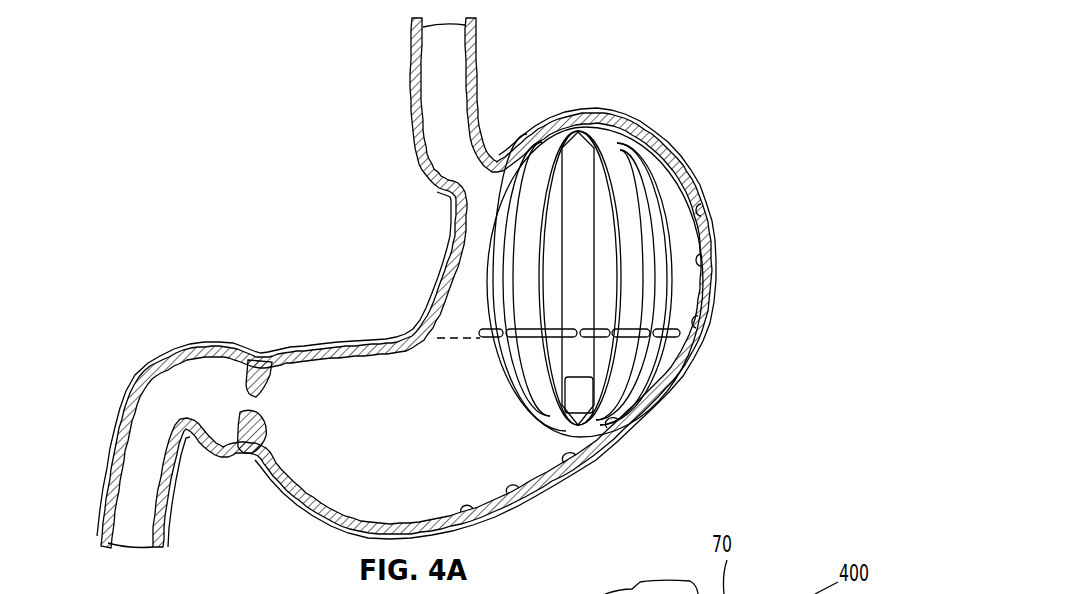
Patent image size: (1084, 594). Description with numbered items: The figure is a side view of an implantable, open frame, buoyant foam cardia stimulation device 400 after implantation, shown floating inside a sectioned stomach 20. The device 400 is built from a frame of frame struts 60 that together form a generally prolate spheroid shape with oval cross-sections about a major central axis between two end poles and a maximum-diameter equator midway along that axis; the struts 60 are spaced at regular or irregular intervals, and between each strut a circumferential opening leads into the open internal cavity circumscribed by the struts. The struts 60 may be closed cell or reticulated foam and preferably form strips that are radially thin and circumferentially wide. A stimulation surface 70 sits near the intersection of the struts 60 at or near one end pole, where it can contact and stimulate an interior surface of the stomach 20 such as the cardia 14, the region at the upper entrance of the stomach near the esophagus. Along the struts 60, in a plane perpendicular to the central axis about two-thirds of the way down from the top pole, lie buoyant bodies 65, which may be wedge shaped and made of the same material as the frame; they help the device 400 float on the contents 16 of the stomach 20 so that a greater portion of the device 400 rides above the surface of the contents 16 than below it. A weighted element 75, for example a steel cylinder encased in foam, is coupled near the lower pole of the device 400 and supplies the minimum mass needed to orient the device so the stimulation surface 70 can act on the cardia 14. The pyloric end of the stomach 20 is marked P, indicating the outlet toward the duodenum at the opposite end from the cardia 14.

The cardia 14 is at (522, 136).
The contents of the stomach 16 is at (533, 455).
The stomach 20 is at (345, 345).
The frame struts 60 is at (637, 243).
The buoyant body 65 is at (680, 330).
The stimulation surface 70 is at (604, 135).
The weighted element 75 is at (583, 393).
The implantable open frame buoyant foam cardia stimulation device 400 is at (663, 177).
The pylorus P is at (251, 458).